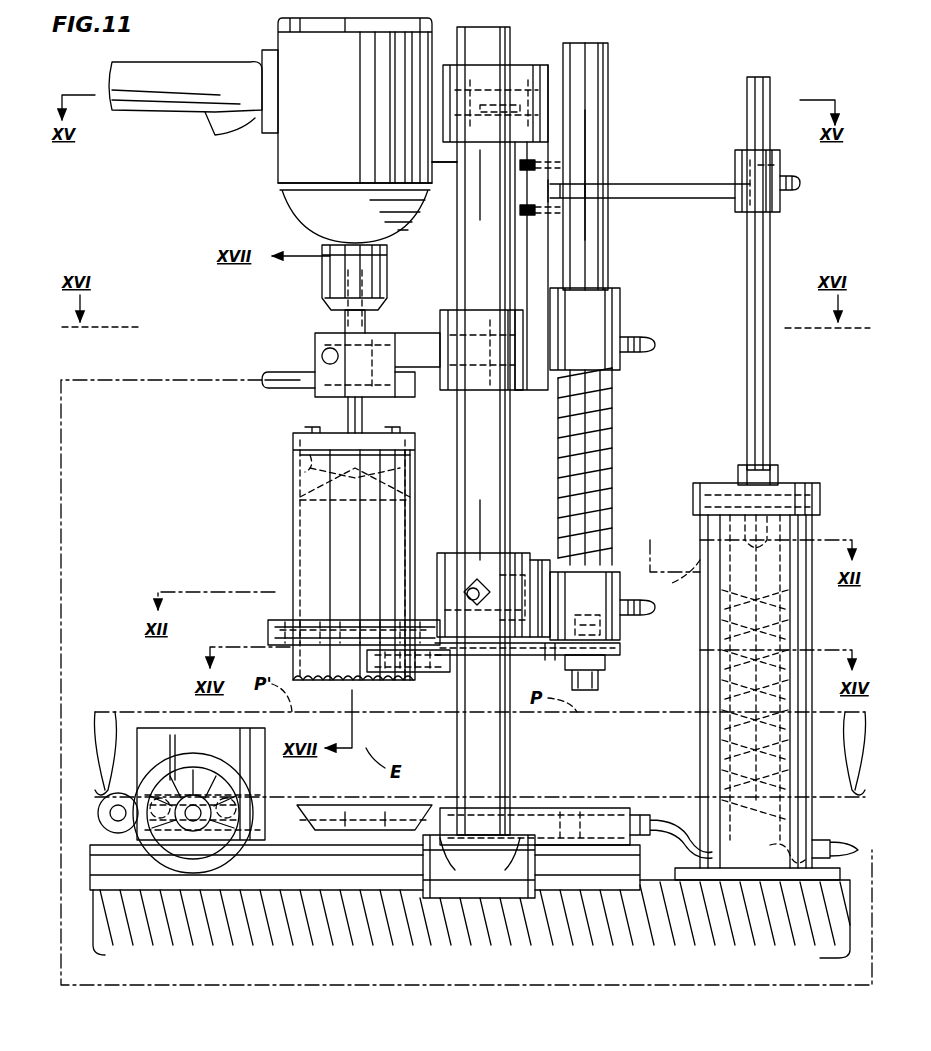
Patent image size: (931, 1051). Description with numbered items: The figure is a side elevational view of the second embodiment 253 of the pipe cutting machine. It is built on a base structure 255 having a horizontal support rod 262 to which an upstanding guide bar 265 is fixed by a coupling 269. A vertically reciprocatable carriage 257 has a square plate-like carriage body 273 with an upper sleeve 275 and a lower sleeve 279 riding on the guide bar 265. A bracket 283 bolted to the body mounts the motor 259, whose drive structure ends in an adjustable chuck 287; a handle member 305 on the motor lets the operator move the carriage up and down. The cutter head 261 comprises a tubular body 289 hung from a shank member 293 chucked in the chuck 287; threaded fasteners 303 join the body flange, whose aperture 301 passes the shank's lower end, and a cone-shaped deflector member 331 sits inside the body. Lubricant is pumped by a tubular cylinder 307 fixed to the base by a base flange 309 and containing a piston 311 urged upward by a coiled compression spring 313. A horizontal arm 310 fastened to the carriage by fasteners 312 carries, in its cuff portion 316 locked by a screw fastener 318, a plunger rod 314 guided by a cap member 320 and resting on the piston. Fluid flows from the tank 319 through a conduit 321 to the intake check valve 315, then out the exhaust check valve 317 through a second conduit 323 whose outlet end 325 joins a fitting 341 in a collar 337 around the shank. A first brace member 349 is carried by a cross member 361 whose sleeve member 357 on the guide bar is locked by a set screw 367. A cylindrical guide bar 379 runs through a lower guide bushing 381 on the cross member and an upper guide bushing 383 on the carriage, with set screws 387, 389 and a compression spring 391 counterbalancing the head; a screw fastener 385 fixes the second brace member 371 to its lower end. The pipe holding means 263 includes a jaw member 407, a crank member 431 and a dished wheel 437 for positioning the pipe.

The second embodiment 253 is at (143, 213).
The base structure 255 is at (480, 930).
The carriage 257 is at (553, 108).
The motor 259 is at (265, 160).
The cutter head 261 is at (258, 556).
The support rod 262 is at (378, 872).
The pipe holding means 263 is at (145, 716).
The guide bar 265 is at (470, 282).
The coupling 269 is at (505, 865).
The carriage body 273 is at (540, 258).
The upper sleeve 275 is at (500, 75).
The lower sleeve 279 is at (472, 328).
The bracket 283 is at (447, 160).
The chuck 287 is at (325, 290).
The tubular body 289 is at (405, 535).
The shank member 293 is at (347, 410).
The aperture 301 is at (310, 470).
The threaded fasteners 303 is at (293, 436).
The handle member 305 is at (142, 80).
The tubular cylinder 307 is at (700, 696).
The base flange 309 is at (832, 848).
The horizontal arm 310 is at (650, 190).
The piston 311 is at (680, 571).
The fasteners 312 is at (522, 208).
The coiled compression spring 313 is at (812, 622).
The plunger rod 314 is at (762, 256).
The intake check valve 315 is at (743, 824).
The cuff portion 316 is at (782, 200).
The exhaust check valve 317 is at (782, 856).
The screw fastener 318 is at (802, 182).
The tank 319 is at (545, 808).
The cap member 320 is at (777, 478).
The conduit 321 is at (685, 808).
The second conduit 323 is at (62, 472).
The outlet end 325 is at (262, 376).
The deflector member 331 is at (320, 482).
The collar 337 is at (316, 352).
The fitting 341 is at (320, 370).
The brace member 349 is at (276, 624).
The sleeve member 357 is at (478, 563).
The cross member 361 is at (582, 570).
The set screw 367 is at (482, 584).
The second brace member 371 is at (442, 670).
The guide bar 379 is at (590, 138).
The guide bushing 381 is at (588, 605).
The guide bushing 383 is at (595, 303).
The screw fastener 385 is at (590, 682).
The set screw 387 is at (655, 607).
The set screw 389 is at (640, 340).
The compression spring 391 is at (615, 438).
The jaw member 407 is at (253, 742).
The crank member 431 is at (116, 810).
The dished wheel 437 is at (237, 810).